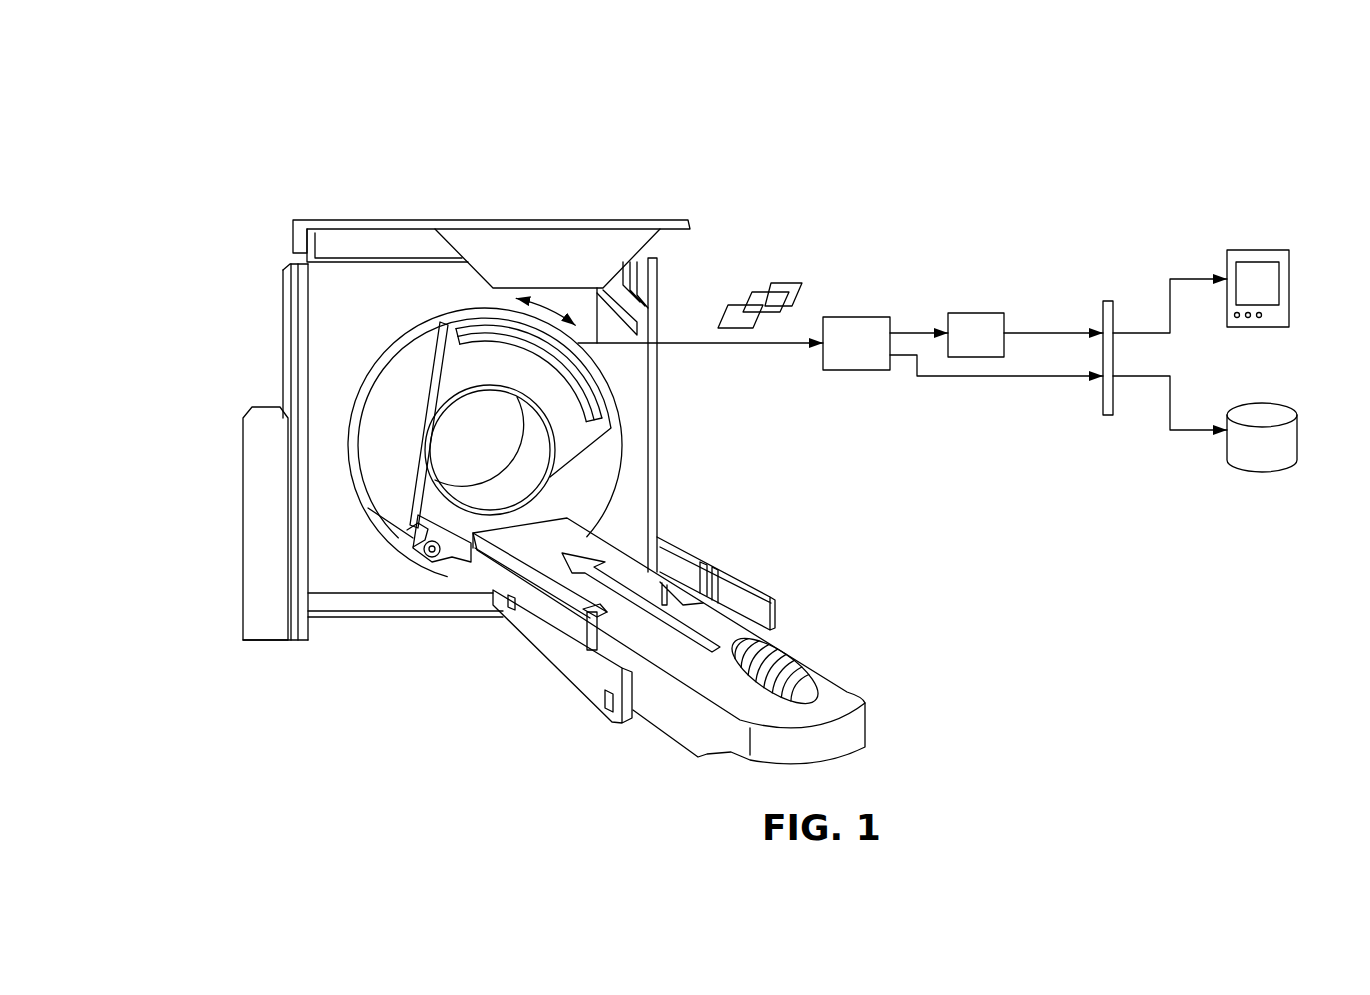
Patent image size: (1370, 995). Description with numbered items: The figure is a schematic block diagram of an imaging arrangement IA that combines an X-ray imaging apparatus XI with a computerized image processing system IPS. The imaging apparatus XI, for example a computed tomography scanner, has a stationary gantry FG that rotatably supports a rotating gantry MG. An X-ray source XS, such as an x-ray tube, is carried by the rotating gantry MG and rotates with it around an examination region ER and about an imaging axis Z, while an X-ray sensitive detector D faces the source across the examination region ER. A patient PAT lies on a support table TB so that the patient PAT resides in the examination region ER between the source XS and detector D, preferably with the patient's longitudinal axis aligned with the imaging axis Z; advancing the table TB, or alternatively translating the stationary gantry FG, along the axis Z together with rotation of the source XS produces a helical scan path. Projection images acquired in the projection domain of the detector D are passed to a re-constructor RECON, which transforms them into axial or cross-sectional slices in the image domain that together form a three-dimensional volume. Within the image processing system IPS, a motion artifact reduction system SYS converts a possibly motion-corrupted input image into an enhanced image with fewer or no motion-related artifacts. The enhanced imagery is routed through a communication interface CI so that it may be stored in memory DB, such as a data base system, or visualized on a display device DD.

The X-ray imaging apparatus XI is at (308, 178).
The imaging arrangement IA is at (727, 175).
The stationary gantry FG is at (287, 316).
The rotating gantry MG is at (457, 363).
The examination region ER is at (450, 440).
The X-ray sensitive detector D is at (582, 380).
The X-ray source XS is at (432, 560).
The support table TB is at (840, 700).
The imaging axis Z is at (641, 608).
The patient PAT is at (815, 668).
The re-constructor RECON is at (845, 362).
The motion artifact reduction system SYS is at (975, 312).
The image processing system IPS is at (957, 202).
The communication interface CI is at (1113, 420).
The display device DD is at (1247, 250).
The memory DB is at (1263, 473).